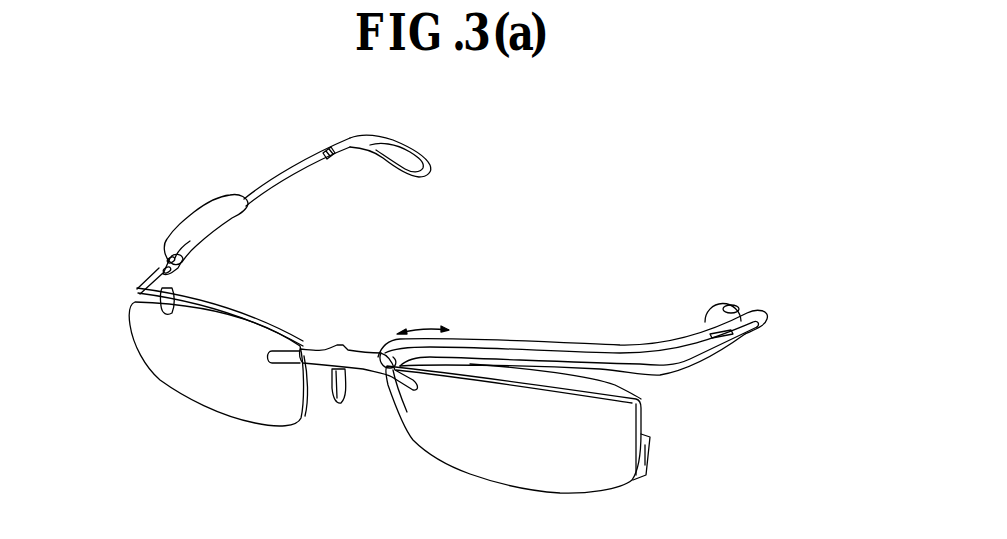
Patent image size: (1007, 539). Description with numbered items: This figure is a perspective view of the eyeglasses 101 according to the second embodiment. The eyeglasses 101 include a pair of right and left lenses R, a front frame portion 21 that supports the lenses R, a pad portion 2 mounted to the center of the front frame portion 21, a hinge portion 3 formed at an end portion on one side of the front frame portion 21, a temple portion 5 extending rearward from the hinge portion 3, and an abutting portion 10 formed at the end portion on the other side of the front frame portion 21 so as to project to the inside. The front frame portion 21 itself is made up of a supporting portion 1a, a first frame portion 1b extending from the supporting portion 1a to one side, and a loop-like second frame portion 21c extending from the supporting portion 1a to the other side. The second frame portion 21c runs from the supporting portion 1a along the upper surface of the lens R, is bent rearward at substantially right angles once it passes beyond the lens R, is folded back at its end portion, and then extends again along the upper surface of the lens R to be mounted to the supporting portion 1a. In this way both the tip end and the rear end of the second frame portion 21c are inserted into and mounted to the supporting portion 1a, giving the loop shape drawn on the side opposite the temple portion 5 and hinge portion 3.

The eyeglasses 101 is at (694, 217).
The supporting portion 1a is at (303, 350).
The first frame portion 1b is at (243, 318).
The pad portion 2 is at (330, 390).
The hinge portion 3 is at (162, 272).
The temple portion 5 is at (286, 167).
The abutting portion 10 is at (752, 299).
The front frame portion 21 is at (370, 315).
The second frame portion 21c is at (530, 348).
The lens R is at (207, 397).